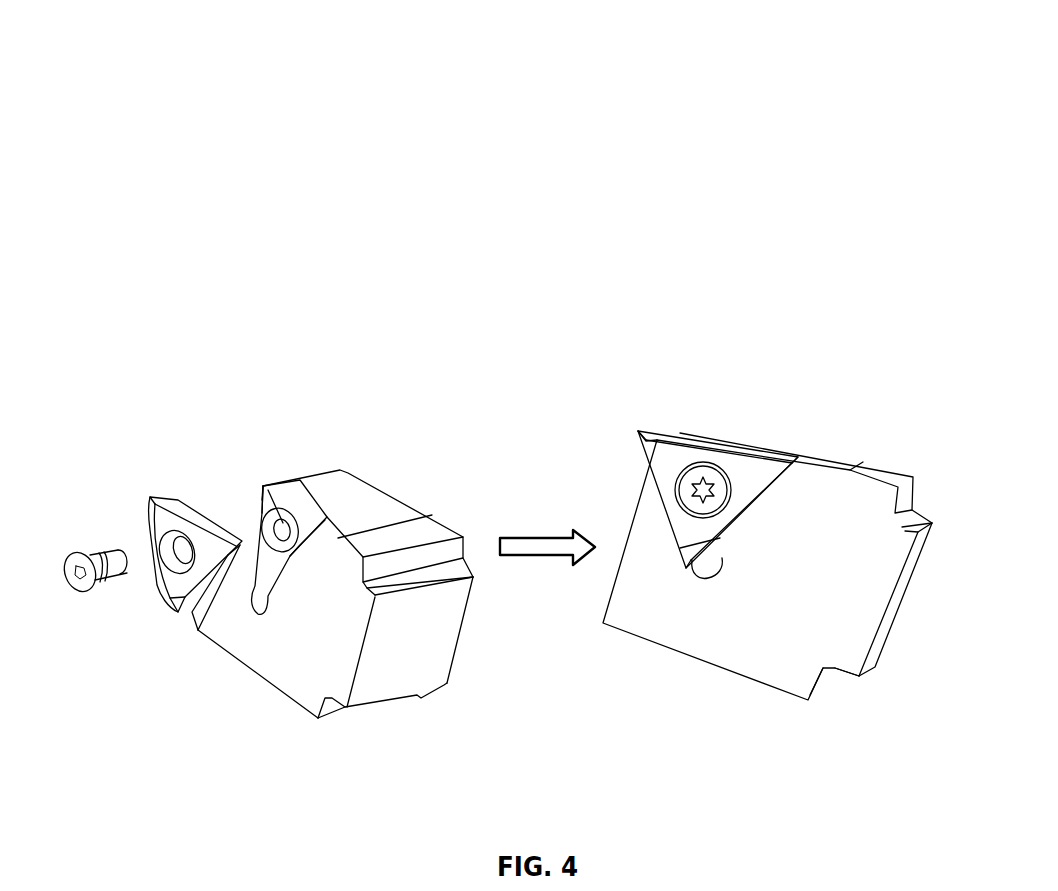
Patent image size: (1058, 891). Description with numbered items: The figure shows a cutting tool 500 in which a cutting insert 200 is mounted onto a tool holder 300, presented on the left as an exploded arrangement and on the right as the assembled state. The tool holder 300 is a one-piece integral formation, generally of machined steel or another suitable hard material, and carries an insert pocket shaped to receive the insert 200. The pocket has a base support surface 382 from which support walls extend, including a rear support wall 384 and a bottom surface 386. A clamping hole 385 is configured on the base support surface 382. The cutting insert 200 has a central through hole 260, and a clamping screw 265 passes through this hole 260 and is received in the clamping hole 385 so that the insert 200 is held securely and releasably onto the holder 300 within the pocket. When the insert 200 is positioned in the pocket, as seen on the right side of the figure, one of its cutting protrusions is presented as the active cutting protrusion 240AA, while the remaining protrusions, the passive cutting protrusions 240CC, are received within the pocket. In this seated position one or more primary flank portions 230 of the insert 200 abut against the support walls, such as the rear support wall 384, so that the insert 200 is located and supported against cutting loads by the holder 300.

The cutting tool assembly 500 is at (204, 128).
The tool holder 300 is at (358, 473).
The rear support wall 384 is at (310, 527).
The base support surface 382 is at (263, 492).
The clamping hole 385 is at (262, 526).
The bottom surface 386 is at (244, 578).
The cutting insert 200 is at (148, 604).
The central through hole 260 is at (147, 526).
The clamping screw 265 is at (79, 592).
The primary flank portion 230 is at (738, 510).
The active cutting protrusion 240AA is at (638, 431).
The passive cutting protrusion 240CC is at (693, 580).